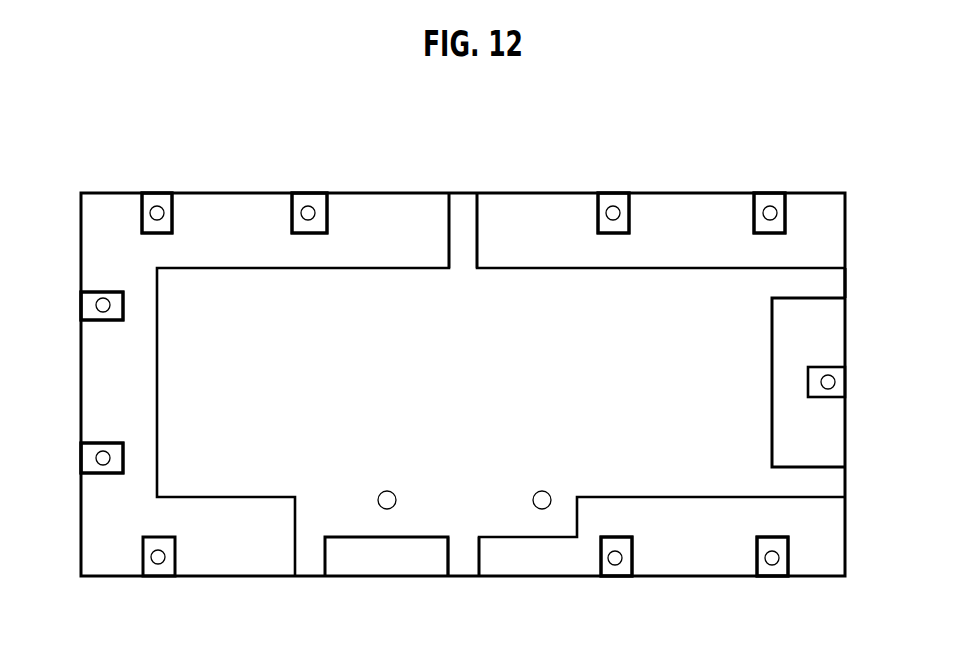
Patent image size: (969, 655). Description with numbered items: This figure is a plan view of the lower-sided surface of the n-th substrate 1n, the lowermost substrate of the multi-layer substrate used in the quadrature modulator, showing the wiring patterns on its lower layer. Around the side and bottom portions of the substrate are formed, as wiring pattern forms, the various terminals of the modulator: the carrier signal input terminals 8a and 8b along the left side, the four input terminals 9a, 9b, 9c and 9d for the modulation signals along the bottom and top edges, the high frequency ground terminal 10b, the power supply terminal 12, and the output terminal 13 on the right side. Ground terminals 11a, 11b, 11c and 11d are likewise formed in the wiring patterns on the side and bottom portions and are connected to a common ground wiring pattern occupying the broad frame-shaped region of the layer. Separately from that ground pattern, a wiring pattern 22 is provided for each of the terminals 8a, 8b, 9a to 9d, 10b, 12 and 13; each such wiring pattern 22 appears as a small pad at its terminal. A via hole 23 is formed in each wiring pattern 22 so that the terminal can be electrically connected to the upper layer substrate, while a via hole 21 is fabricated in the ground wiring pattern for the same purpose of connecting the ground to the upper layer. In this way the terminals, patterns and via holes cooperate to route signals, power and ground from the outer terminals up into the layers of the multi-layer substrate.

The n-th substrate 1n is at (710, 134).
The carrier signal input terminal 8a is at (82, 298).
The carrier signal input terminal 8b is at (82, 460).
The input terminal for modulation signals 9a is at (616, 578).
The input terminal for modulation signals 9b is at (772, 578).
The input terminal for modulation signals 9c is at (614, 194).
The input terminal for modulation signals 9d is at (772, 195).
The high frequency ground terminal 10b is at (156, 194).
The ground terminal 11a is at (462, 195).
The ground terminal 11b is at (465, 574).
The ground terminal 11c is at (318, 562).
The ground terminal 11d is at (847, 282).
The power supply terminal 12 is at (312, 194).
The output terminal 13 is at (847, 381).
The via hole 21 is at (396, 494).
The wiring pattern 22 is at (170, 233).
The via hole 23 is at (164, 213).